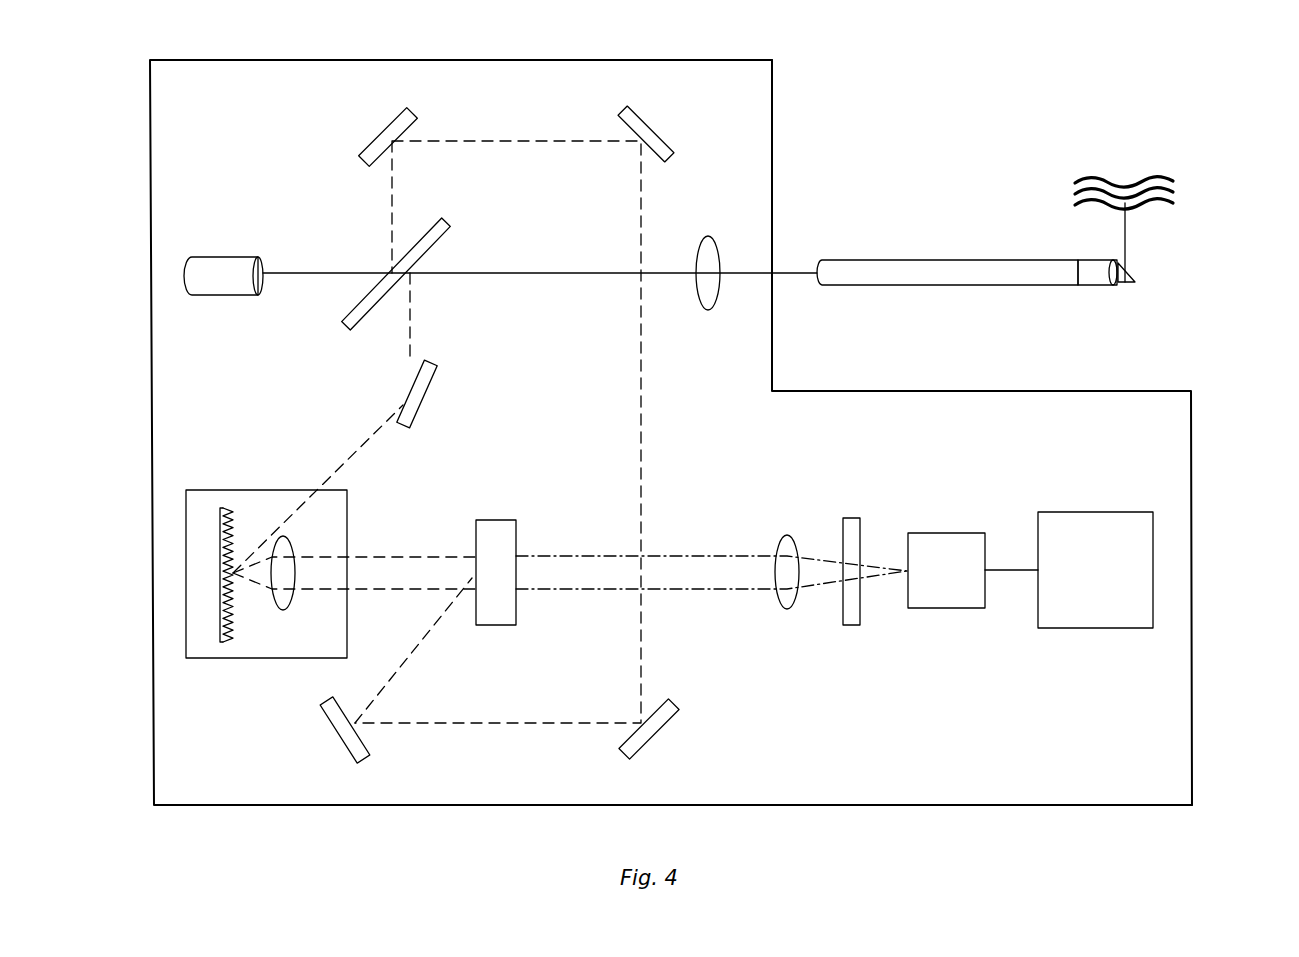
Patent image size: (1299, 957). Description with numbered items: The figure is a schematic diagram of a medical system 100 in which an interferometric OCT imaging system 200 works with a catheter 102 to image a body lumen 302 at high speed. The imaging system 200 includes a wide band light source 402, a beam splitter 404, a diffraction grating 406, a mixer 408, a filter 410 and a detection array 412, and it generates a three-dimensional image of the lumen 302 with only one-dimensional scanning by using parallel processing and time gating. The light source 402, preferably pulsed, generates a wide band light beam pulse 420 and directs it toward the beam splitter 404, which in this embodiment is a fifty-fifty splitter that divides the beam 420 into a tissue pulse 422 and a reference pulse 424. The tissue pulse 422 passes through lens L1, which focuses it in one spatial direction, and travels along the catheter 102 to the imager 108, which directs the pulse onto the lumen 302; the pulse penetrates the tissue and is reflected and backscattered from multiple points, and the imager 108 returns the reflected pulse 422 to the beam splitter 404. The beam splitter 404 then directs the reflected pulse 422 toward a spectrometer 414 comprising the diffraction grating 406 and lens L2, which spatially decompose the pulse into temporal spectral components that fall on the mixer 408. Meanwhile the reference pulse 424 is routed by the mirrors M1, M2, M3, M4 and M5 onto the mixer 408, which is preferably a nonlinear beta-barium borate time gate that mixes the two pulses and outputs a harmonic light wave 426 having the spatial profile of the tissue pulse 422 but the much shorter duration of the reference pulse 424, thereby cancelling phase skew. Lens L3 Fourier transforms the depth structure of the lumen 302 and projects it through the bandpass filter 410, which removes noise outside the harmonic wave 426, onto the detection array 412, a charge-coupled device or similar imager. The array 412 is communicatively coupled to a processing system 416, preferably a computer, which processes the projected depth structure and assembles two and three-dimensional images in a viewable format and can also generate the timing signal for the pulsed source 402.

The system 100 is at (340, 812).
The imaging system 200 is at (1192, 520).
The catheter 102 is at (938, 285).
The imager 108 is at (1103, 283).
The lumen 302 is at (1100, 178).
The wide band light source 402 is at (233, 257).
The beam splitter 404 is at (452, 230).
The diffraction grating 406 is at (225, 510).
The mixer 408 is at (498, 520).
The filter 410 is at (848, 625).
The detection array 412 is at (973, 570).
The spectrometer 414 is at (250, 658).
The processing system 416 is at (1095, 570).
The wide band light beam pulse 420 is at (312, 271).
The tissue pulse 422 is at (362, 443).
The reference pulse 424 is at (643, 440).
The light wave 426 is at (590, 558).
The mirror M1 is at (382, 137).
The mirror M2 is at (654, 134).
The mirror M3 is at (658, 733).
The mirror M4 is at (333, 732).
The mirror M5 is at (431, 394).
The lens L1 is at (707, 290).
The lens L2 is at (284, 590).
The lens L3 is at (788, 587).